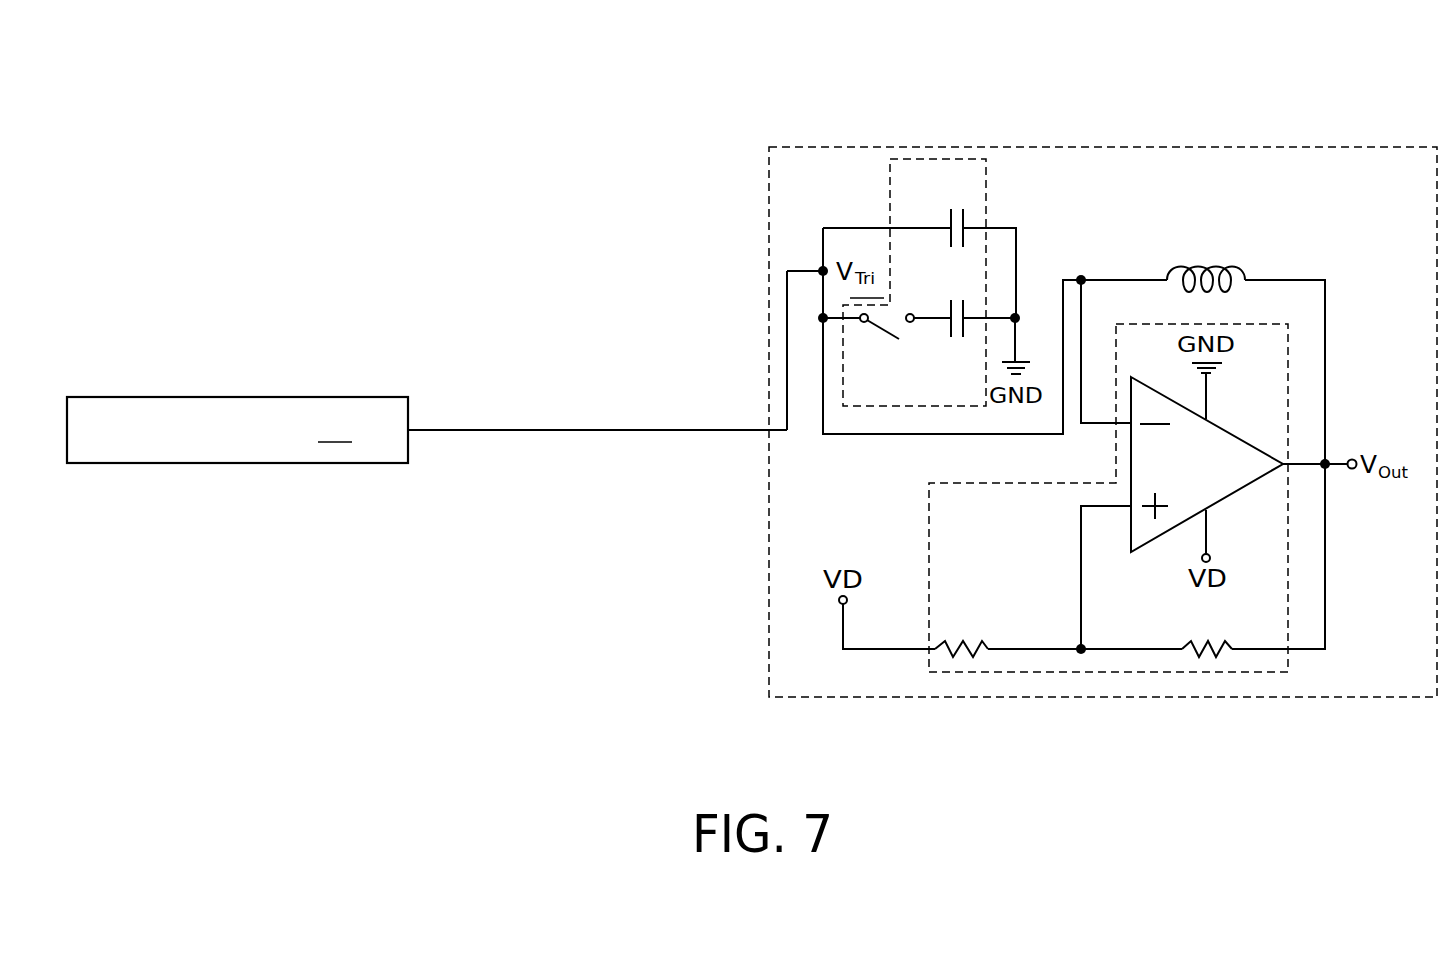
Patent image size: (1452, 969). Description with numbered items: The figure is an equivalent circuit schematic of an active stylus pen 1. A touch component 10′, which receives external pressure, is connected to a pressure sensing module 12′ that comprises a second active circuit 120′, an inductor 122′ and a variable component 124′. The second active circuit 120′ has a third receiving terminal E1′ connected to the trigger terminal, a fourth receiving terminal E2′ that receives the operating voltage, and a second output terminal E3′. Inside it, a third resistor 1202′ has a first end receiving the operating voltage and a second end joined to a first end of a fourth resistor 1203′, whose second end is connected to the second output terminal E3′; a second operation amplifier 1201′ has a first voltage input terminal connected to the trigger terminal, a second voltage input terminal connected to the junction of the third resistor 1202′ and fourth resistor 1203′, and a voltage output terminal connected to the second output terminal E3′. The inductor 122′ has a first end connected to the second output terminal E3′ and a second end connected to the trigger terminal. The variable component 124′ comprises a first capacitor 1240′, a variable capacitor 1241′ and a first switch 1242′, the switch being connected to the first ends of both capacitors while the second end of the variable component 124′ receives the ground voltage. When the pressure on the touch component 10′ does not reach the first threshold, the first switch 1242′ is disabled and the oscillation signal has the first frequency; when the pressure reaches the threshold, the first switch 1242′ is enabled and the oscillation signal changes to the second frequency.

The active stylus pen 1 is at (85, 73).
The touch component 10′ is at (237, 430).
The pressure sensing module 12′ is at (1385, 147).
The second active circuit 120′ is at (1288, 345).
The second operation amplifier 1201′ is at (1242, 438).
The third resistor 1202′ is at (960, 641).
The fourth resistor 1203′ is at (1206, 641).
The inductor 122′ is at (1215, 262).
The variable component 124′ is at (986, 190).
The first capacitor 1240′ is at (957, 211).
The variable capacitor 1241′ is at (957, 300).
The first switch 1242′ is at (880, 335).
The third receiving terminal E1′ is at (1094, 426).
The fourth receiving terminal E2′ is at (878, 650).
The second output terminal E3′ is at (1310, 470).